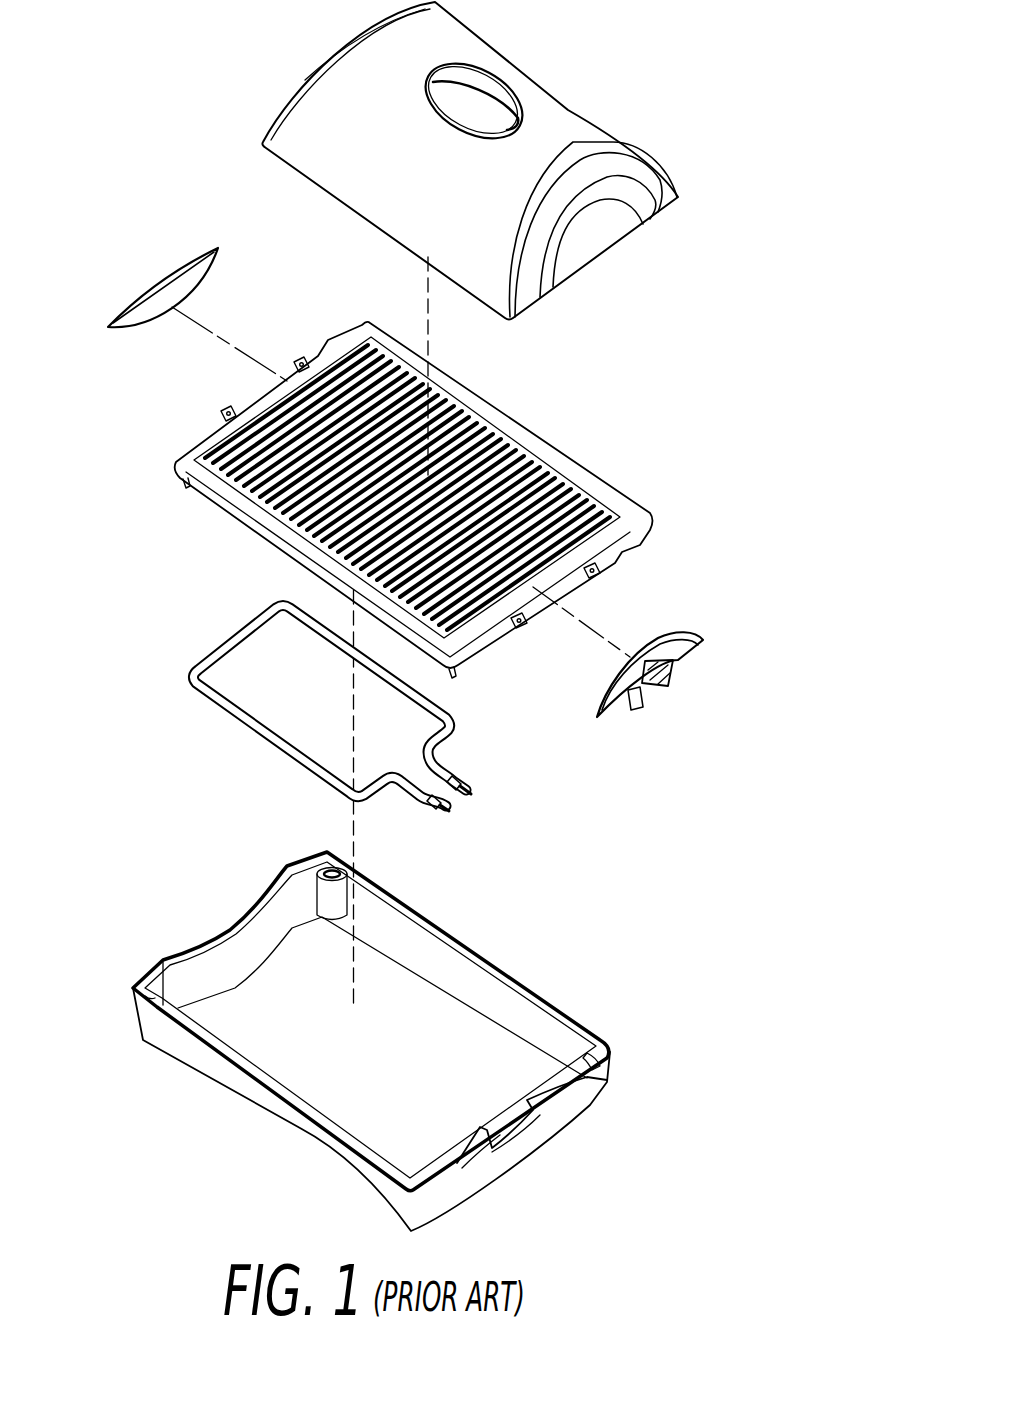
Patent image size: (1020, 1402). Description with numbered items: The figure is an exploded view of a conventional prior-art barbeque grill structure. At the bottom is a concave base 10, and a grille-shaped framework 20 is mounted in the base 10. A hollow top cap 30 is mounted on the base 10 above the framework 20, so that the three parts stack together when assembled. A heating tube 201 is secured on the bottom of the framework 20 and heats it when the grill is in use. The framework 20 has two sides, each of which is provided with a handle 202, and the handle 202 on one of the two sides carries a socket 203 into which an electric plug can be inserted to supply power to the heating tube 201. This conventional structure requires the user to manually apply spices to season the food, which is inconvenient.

The concave base 10 is at (325, 1075).
The grille-shaped framework 20 is at (505, 432).
The hollow top cap 30 is at (558, 128).
The heating tube 201 is at (253, 722).
The handle 202 is at (163, 287).
The socket 203 is at (663, 688).